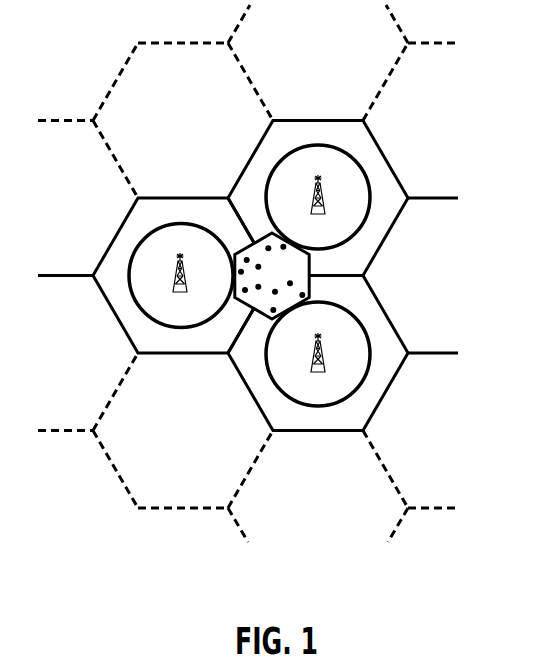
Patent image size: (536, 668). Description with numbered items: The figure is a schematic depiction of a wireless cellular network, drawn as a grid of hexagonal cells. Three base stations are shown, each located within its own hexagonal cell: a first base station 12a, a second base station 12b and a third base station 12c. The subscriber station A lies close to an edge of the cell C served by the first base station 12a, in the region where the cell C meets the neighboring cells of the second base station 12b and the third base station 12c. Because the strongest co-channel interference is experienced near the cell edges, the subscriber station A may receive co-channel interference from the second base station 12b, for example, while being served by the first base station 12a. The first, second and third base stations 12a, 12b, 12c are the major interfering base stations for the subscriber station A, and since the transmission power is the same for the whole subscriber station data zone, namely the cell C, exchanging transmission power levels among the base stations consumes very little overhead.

The base station BS1 12a is at (175, 268).
The base station BS2 12b is at (323, 193).
The base station BS3 12c is at (323, 348).
The subscriber station A is at (258, 266).
The cell C is at (123, 317).